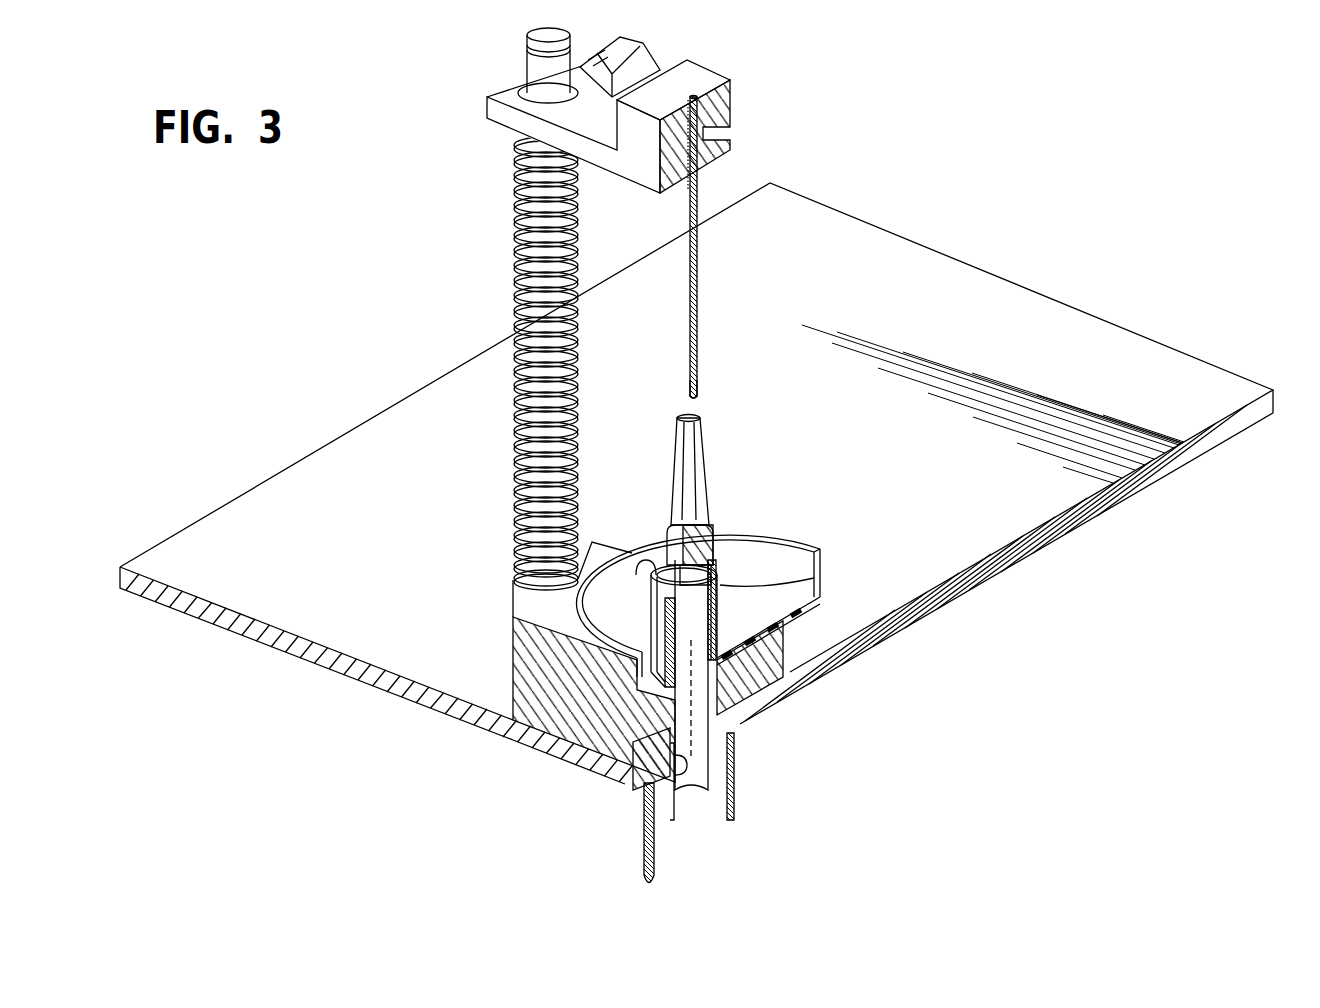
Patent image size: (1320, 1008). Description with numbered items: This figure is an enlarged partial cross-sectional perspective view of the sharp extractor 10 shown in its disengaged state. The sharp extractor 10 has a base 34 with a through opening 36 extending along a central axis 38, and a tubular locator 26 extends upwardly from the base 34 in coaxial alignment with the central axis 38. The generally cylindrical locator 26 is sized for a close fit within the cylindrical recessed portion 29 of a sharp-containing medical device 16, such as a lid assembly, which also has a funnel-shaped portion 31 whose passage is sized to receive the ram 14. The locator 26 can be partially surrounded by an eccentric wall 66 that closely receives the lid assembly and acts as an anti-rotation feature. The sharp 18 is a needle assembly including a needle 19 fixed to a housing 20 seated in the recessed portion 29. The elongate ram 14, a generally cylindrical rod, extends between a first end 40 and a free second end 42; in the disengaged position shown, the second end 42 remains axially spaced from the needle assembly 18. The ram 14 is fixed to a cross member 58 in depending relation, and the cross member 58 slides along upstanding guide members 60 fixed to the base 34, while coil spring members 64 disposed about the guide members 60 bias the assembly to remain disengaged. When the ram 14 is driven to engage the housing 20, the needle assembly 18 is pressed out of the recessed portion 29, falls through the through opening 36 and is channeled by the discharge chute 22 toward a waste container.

The sharp extractor 10 is at (1042, 157).
The ram 14 is at (688, 335).
The medical device 16 is at (794, 536).
The sharp 18 is at (712, 607).
The needle 19 is at (765, 640).
The housing 20 is at (757, 557).
The discharge chute 22 is at (645, 845).
The tubular locator 26 is at (722, 585).
The cylindrical recessed portion 29 is at (648, 590).
The funnel-shaped portion 31 is at (700, 522).
The base 34 is at (552, 695).
The through opening 36 is at (640, 787).
The central axis 38 is at (668, 665).
The first end 40 is at (700, 99).
The free second end 42 is at (694, 398).
The cross member 58 is at (513, 120).
The guide members 60 is at (525, 72).
The spring members 64 is at (513, 190).
The wall 66 is at (648, 566).